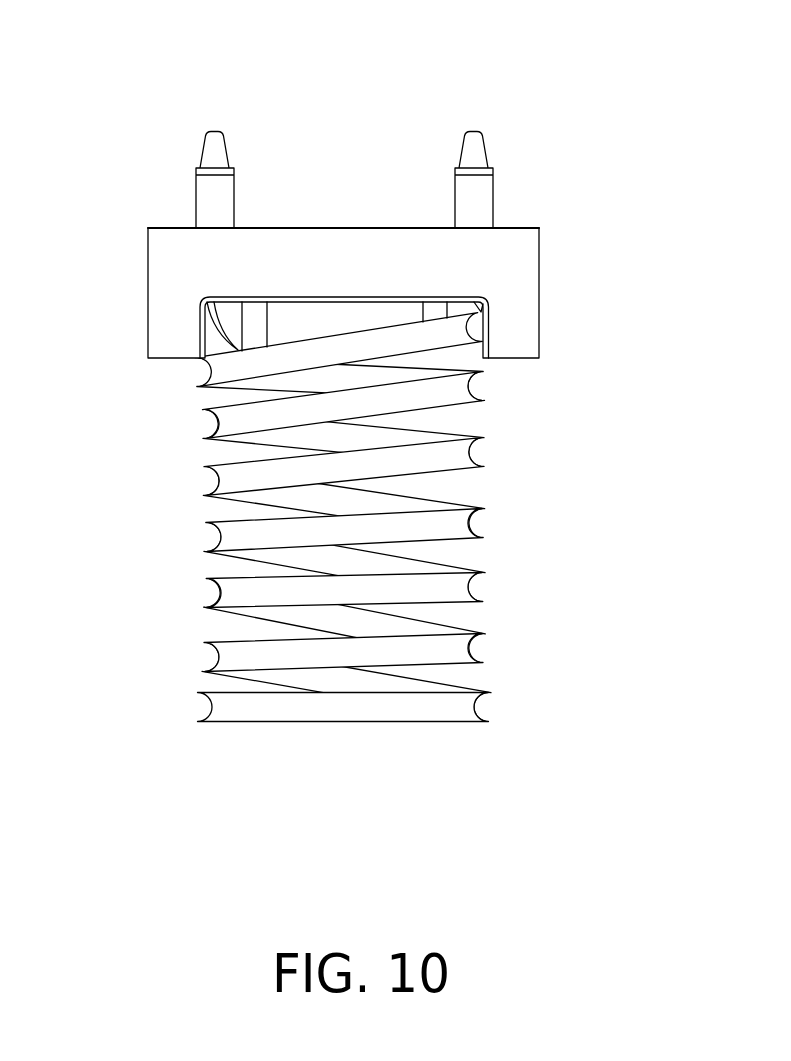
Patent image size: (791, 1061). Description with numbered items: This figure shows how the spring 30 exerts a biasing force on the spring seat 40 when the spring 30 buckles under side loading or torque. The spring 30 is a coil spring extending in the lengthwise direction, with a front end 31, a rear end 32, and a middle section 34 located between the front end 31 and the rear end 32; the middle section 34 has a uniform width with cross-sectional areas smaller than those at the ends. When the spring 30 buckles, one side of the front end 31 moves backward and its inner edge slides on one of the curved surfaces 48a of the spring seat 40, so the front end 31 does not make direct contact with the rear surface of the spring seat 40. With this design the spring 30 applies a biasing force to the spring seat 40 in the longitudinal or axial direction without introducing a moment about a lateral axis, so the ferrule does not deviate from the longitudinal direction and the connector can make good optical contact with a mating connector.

The spring seat 40 is at (351, 184).
The front end 31 is at (340, 336).
The curved surfaces 48a is at (212, 330).
The middle section 34 is at (338, 532).
The spring 30 is at (429, 443).
The rear end 32 is at (340, 722).